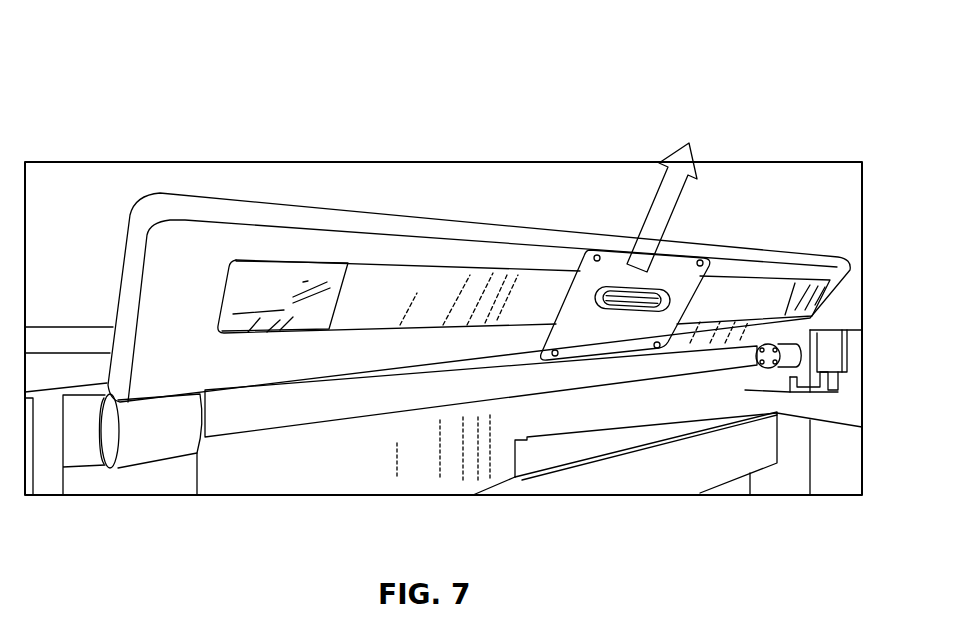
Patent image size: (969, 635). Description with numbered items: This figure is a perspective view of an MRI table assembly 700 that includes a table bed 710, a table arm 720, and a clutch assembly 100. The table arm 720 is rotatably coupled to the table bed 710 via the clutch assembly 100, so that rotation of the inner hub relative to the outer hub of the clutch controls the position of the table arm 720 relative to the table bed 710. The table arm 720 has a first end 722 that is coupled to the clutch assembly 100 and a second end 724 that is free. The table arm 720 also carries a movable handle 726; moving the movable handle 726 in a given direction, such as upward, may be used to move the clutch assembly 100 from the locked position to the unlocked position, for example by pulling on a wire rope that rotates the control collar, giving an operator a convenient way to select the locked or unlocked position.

The MRI table assembly 700 is at (633, 92).
The table bed 710 is at (52, 342).
The table arm 720 is at (475, 226).
The first end 722 is at (165, 440).
The second end 724 is at (185, 177).
The movable handle 726 is at (658, 286).
The clutch assembly 100 is at (90, 455).